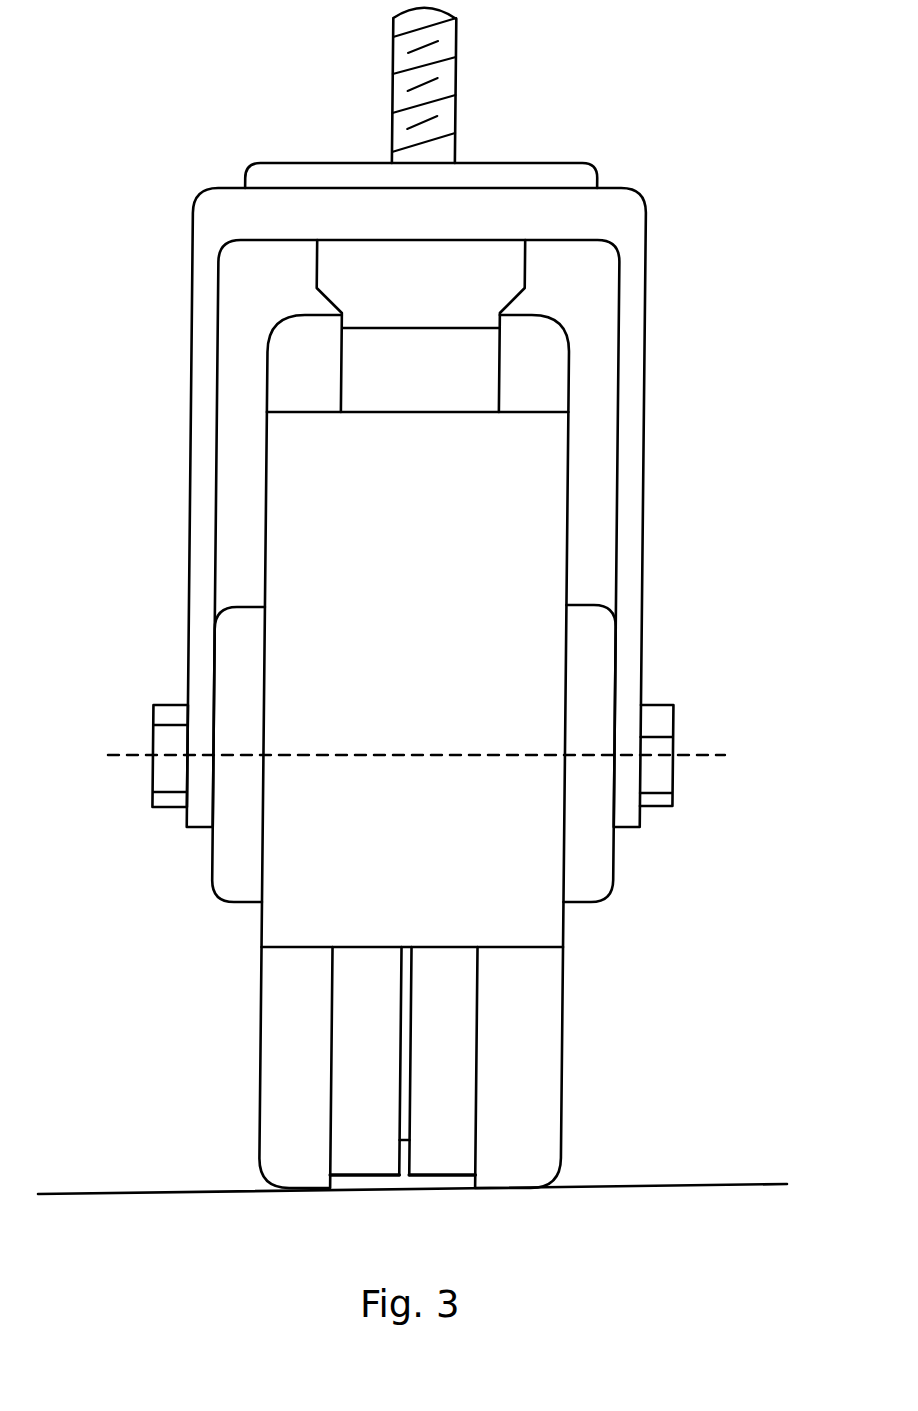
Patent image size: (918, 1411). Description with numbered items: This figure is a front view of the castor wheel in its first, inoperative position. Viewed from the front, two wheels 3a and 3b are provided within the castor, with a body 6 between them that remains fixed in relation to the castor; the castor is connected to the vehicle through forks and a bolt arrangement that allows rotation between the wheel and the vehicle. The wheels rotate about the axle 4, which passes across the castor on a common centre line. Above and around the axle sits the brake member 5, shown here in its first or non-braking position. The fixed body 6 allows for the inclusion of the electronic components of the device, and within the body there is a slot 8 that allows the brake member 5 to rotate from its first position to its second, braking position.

The brake member 5 is at (485, 525).
The axle 4 is at (673, 742).
The wheel 3a is at (300, 1022).
The wheel 3b is at (537, 990).
The body 6 is at (453, 1130).
The slot 8 is at (410, 1052).